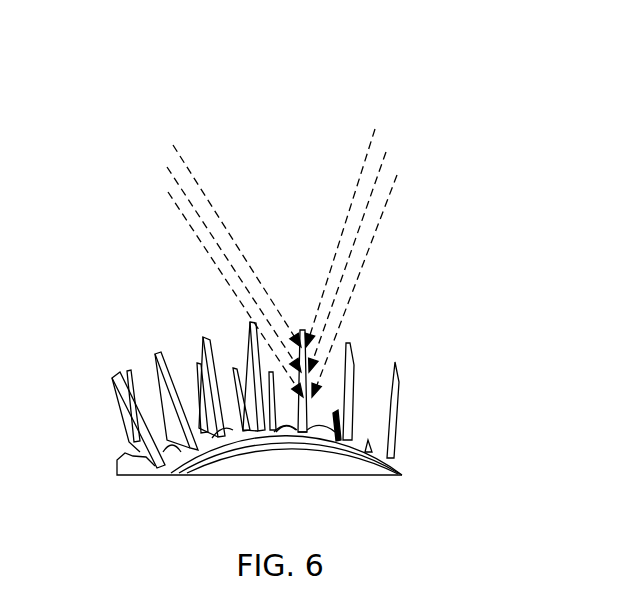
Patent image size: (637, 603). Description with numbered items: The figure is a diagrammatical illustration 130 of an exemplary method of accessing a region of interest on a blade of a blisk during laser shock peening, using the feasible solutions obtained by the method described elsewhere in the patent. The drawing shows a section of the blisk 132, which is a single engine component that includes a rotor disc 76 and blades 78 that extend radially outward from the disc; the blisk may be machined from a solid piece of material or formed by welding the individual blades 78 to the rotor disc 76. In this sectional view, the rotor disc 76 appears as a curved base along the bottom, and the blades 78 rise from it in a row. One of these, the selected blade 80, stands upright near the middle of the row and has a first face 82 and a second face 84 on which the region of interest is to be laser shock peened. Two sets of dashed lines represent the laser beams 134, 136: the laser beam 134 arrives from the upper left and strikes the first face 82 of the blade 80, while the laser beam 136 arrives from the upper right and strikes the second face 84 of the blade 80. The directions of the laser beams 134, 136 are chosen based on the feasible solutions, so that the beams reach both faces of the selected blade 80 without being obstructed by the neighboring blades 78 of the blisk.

The diagrammatical illustration 130 is at (491, 82).
The section of the blisk 132 is at (416, 468).
The laser beam 134 is at (190, 227).
The laser beam 136 is at (381, 227).
The rotor disc 76 is at (377, 470).
The blades 78 is at (353, 363).
The selected blade 80 is at (310, 403).
The first face 82 is at (285, 425).
The second face 84 is at (305, 427).